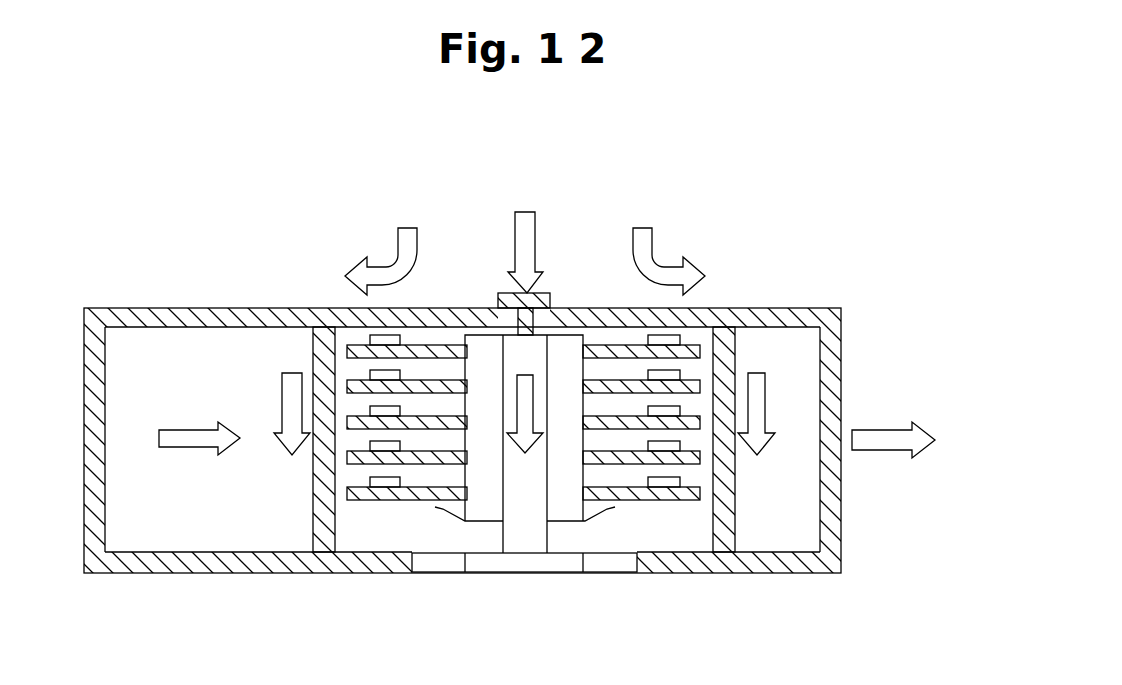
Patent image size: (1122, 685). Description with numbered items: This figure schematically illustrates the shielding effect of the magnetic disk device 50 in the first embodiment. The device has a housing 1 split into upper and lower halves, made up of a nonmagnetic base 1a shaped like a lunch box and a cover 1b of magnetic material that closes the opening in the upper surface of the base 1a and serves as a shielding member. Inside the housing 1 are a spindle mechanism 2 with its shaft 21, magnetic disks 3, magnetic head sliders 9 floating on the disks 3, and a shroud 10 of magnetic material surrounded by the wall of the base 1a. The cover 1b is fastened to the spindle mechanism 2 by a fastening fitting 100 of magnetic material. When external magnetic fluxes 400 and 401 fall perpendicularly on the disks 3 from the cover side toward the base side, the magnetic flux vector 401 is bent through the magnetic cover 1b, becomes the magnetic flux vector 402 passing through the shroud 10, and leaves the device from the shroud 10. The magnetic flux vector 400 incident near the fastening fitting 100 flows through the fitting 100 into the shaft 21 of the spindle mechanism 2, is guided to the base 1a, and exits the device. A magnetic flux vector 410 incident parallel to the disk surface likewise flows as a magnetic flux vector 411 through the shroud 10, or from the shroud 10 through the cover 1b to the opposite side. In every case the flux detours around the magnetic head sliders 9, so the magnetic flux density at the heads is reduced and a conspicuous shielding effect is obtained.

The housing 1 is at (847, 378).
The base 1a is at (797, 562).
The cover 1b is at (302, 317).
The spindle mechanism 2 is at (493, 530).
The magnetic disk 3 is at (642, 387).
The magnetic head slider 9 is at (385, 407).
The shroud 10 is at (734, 362).
The shaft 21 is at (537, 528).
The magnetic disk device 50 is at (750, 222).
The fastening fitting 100 is at (550, 292).
The magnetic flux vector 400 is at (527, 222).
The magnetic flux vector 401 is at (408, 235).
The magnetic flux vector 402 is at (287, 393).
The magnetic flux vector 410 is at (188, 440).
The magnetic flux vector 411 is at (893, 440).